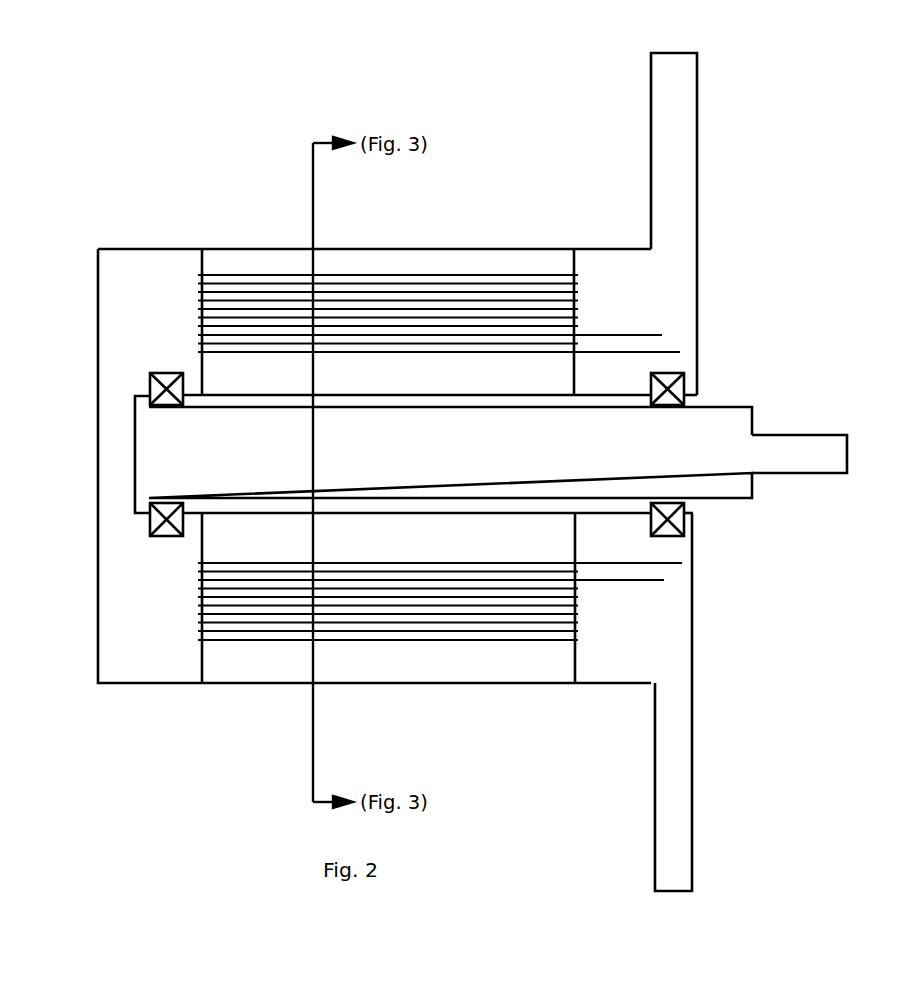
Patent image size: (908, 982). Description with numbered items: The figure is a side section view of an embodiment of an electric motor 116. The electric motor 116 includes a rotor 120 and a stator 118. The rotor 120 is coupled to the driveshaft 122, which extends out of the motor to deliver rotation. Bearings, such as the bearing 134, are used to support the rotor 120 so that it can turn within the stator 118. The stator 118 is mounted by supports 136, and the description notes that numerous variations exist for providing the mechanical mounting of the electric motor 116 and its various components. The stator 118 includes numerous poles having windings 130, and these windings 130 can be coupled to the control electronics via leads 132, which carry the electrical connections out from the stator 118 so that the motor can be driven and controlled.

The electric motor 116 is at (100, 68).
The stator 118 is at (199, 263).
The rotor 120 is at (709, 501).
The driveshaft 122 is at (811, 467).
The windings 130 is at (430, 562).
The leads 132 is at (647, 585).
The bearing 134 is at (688, 401).
The supports 136 is at (697, 88).